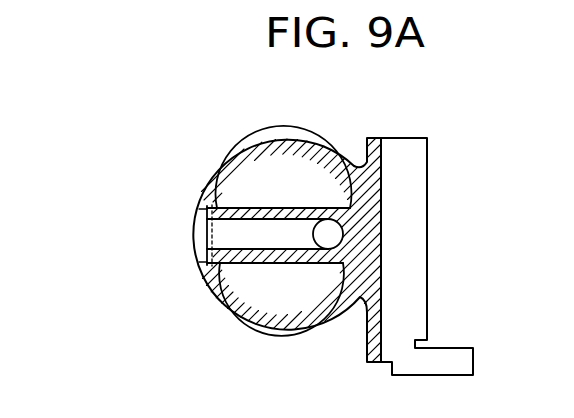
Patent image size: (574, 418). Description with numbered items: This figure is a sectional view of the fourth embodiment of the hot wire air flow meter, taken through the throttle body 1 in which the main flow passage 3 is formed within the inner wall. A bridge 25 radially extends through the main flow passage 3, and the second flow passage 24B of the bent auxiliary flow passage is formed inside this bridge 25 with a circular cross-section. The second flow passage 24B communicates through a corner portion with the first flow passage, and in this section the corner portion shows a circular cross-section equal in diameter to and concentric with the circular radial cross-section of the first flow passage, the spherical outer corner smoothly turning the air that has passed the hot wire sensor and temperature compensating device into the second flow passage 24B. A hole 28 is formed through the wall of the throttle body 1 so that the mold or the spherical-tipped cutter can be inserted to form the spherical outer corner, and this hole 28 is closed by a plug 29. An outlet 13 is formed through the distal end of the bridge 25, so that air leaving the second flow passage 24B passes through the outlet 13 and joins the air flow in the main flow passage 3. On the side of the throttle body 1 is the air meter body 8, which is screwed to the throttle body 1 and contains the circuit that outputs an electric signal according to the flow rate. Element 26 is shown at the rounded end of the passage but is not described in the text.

The throttle body 1 is at (313, 140).
The main flow passage 3 is at (302, 302).
The air meter body 8 is at (427, 242).
The outlet 13 is at (232, 211).
The second flow passage 24B is at (220, 298).
The bridge 25 is at (265, 207).
The shaft end 26 is at (340, 230).
The hole 28 is at (197, 223).
The plug 29 is at (199, 244).